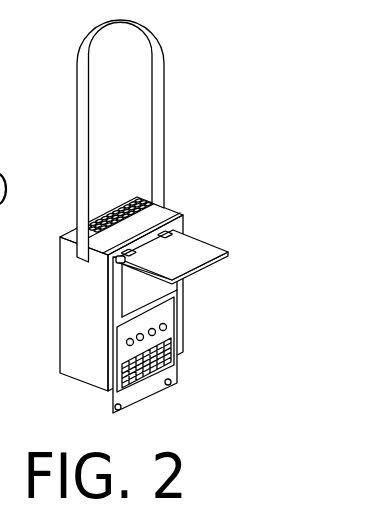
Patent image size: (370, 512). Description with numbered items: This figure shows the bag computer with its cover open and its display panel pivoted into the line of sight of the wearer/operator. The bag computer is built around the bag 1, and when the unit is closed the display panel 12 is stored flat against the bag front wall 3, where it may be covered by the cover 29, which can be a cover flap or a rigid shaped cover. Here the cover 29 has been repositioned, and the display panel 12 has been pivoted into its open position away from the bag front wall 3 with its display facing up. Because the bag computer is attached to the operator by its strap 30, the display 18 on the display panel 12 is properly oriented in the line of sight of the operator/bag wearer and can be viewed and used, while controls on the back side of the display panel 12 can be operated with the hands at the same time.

The bag 1 is at (128, 195).
The bag front wall 3 is at (112, 281).
The display panel 12 is at (210, 270).
The display 18 is at (183, 248).
The cover 29 is at (147, 393).
The strap 30 is at (157, 89).